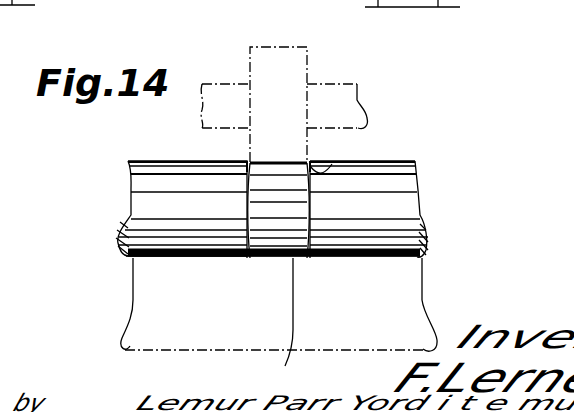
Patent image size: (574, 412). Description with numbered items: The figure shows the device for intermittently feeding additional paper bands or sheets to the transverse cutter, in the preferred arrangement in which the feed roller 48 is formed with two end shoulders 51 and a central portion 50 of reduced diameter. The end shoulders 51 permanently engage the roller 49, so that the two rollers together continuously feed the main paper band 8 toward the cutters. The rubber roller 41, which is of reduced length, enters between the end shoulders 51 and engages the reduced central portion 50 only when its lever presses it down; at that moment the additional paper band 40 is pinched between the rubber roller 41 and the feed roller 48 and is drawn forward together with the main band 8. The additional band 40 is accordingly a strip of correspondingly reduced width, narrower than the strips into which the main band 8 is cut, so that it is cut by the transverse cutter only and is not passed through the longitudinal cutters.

The rubber roller 41 is at (310, 73).
The feed roller 48 is at (410, 205).
The central portion 50 is at (322, 174).
The end shoulders 51 is at (332, 259).
The main paper band 8 is at (420, 259).
The roller 49 is at (412, 283).
The additional paper band 40 is at (296, 318).